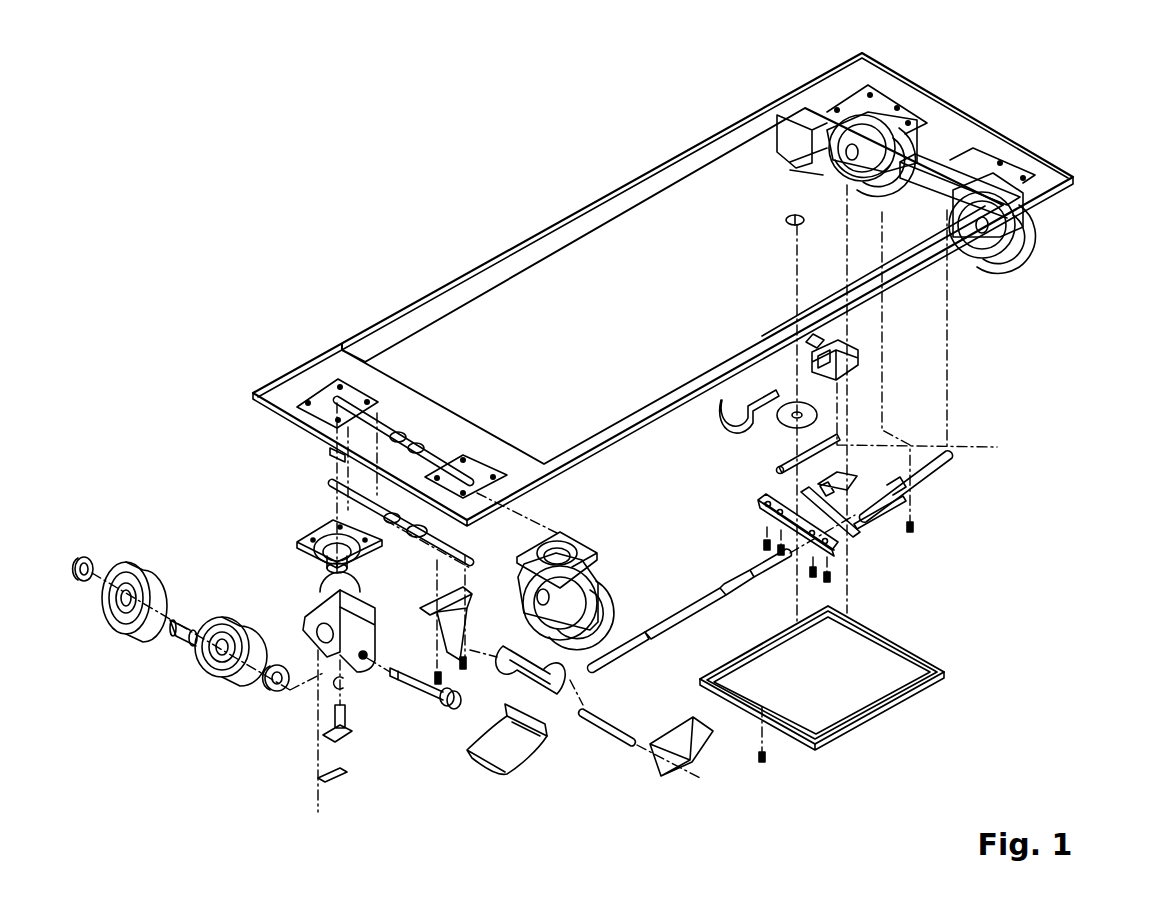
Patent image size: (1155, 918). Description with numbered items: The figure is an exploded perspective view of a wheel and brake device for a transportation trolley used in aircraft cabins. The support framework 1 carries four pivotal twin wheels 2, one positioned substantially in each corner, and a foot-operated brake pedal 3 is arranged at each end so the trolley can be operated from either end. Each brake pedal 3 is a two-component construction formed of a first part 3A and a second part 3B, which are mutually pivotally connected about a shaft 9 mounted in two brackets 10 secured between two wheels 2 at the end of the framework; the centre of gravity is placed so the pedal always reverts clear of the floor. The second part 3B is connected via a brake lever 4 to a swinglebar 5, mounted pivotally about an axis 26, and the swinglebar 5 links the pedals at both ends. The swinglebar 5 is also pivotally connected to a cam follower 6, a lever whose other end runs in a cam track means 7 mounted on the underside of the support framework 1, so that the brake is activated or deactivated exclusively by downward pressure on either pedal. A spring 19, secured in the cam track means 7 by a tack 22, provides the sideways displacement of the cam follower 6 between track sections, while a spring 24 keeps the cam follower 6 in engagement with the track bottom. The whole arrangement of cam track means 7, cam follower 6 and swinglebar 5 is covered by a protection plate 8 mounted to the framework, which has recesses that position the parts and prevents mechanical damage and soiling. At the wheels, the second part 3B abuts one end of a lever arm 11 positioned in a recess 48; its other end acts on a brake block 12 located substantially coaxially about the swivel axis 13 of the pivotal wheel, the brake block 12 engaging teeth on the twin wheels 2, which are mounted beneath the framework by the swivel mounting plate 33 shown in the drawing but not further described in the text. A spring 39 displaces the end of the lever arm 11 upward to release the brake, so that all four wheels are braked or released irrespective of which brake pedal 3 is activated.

The support framework 1 is at (573, 206).
The pivotal twin wheel 2 is at (1052, 235).
The brake pedal 3 is at (953, 165).
The first part of brake pedal 3A is at (502, 752).
The second part of brake pedal 3B is at (553, 697).
The brake lever 4 is at (913, 482).
The swinglebar 5 is at (843, 543).
The cam follower 6 is at (852, 448).
The cam track means 7 is at (858, 362).
The protection plate 8 is at (802, 680).
The shaft 9 is at (587, 712).
The bracket 10 is at (668, 748).
The lever arm 11 is at (398, 520).
The brake block 12 is at (348, 727).
The swivel axis 13 is at (337, 455).
The spring 19 is at (768, 405).
The tack 22 is at (812, 335).
The spring 24 is at (760, 503).
The axis 26 is at (790, 446).
The swivel plate 33 is at (298, 545).
The spring 39 is at (333, 780).
The recess 48 is at (437, 458).